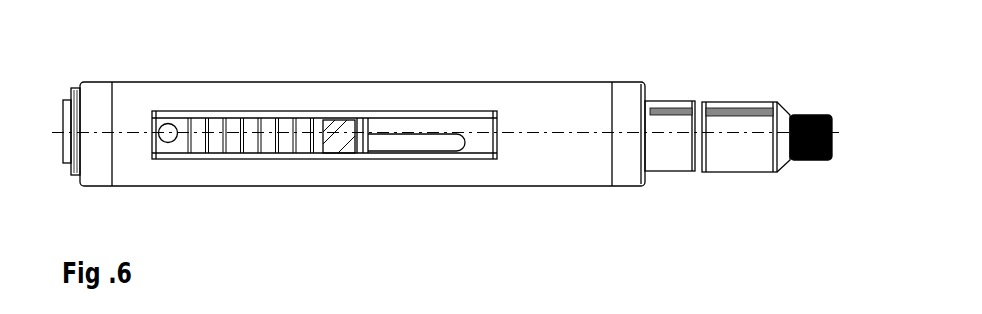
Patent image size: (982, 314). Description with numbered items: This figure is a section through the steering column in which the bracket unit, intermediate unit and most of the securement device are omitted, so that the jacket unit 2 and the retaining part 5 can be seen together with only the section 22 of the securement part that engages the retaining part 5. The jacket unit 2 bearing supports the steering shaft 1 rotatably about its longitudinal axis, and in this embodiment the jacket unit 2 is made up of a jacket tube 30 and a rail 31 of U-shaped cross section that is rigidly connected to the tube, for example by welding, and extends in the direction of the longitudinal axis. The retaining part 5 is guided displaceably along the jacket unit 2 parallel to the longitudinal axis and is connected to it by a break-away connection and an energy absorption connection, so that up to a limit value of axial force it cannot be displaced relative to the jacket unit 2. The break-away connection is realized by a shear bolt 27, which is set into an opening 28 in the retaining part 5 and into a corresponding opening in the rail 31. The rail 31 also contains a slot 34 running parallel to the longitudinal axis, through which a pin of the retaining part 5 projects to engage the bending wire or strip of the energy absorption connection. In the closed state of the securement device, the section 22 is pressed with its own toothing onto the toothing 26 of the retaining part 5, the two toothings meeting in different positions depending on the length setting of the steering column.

The steering shaft 1 is at (738, 104).
The jacket unit 2 is at (605, 192).
The retaining part 5 is at (275, 165).
The section of the securement part 22 is at (238, 94).
The toothing of the retaining part 26 is at (251, 83).
The shear bolt 27 is at (172, 118).
The opening in the retaining part 28 is at (158, 114).
The jacket tube 30 is at (584, 161).
The rail 31 is at (419, 175).
The slot 34 is at (405, 143).